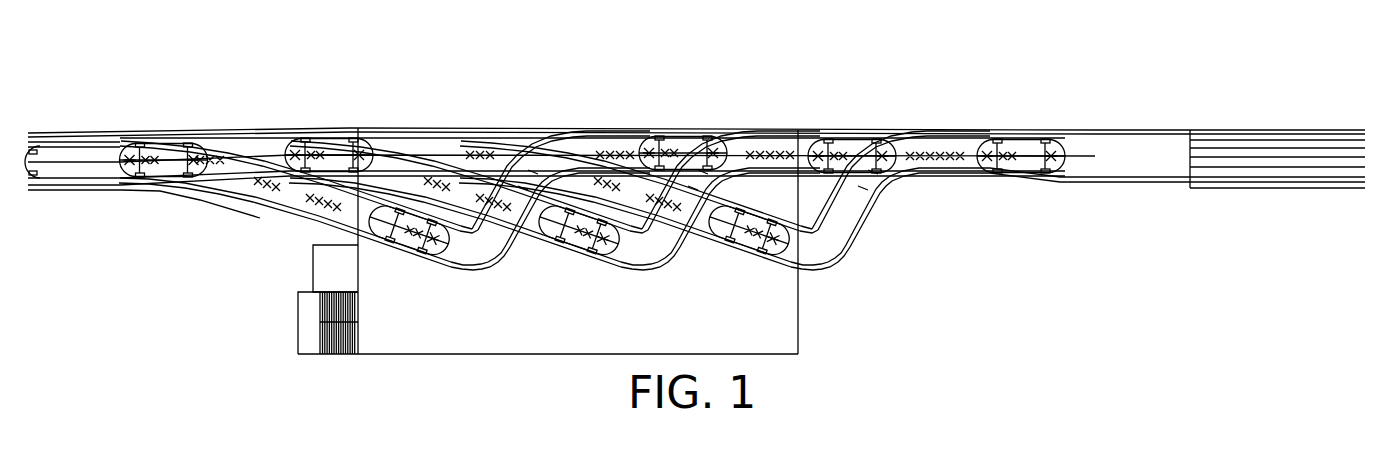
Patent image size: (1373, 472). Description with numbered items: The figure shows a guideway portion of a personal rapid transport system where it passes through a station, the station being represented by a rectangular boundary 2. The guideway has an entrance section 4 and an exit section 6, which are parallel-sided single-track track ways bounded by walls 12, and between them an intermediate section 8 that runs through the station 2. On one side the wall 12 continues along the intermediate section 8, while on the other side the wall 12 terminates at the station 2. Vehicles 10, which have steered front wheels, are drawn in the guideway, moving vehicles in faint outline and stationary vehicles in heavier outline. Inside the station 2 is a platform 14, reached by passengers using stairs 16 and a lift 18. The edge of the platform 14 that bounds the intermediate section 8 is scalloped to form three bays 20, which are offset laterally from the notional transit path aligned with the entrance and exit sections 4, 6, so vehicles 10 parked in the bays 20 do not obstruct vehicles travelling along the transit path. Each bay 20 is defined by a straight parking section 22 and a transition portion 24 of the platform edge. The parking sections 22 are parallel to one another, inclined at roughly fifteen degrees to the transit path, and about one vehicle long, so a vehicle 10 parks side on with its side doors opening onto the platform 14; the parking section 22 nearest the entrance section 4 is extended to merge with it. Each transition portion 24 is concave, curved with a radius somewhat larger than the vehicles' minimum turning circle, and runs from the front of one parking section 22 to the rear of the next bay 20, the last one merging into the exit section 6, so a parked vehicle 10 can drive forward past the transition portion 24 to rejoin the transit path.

The rectangular boundary 2 is at (440, 356).
The entrance section 4 is at (78, 130).
The exit section 6 is at (1269, 130).
The intermediate section 8 is at (524, 128).
The vehicles 10 is at (178, 146).
The walls 12 is at (164, 194).
The platform 14 is at (565, 339).
The stairs 16 is at (298, 326).
The lift 18 is at (313, 272).
The bays 20 is at (476, 268).
The parking section 22 is at (404, 256).
The transition portion 24 is at (516, 266).